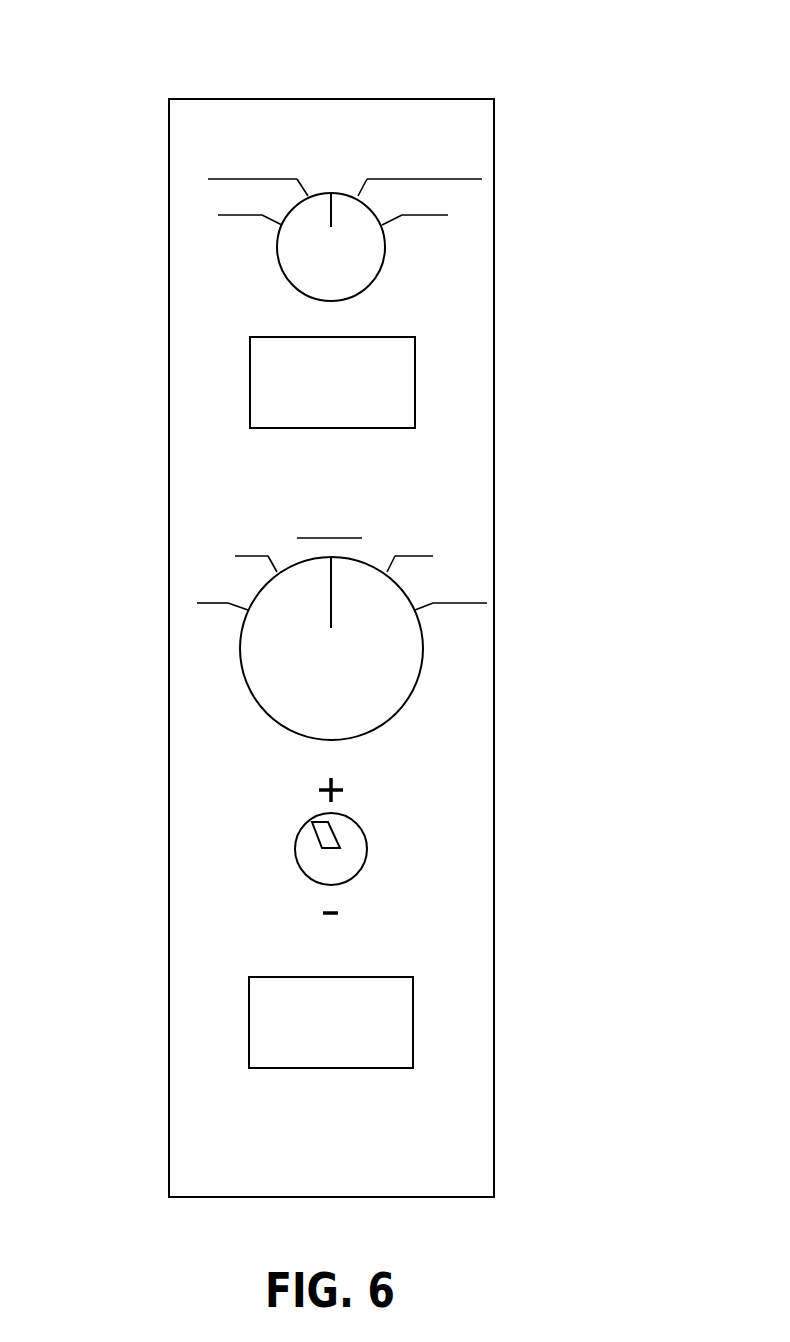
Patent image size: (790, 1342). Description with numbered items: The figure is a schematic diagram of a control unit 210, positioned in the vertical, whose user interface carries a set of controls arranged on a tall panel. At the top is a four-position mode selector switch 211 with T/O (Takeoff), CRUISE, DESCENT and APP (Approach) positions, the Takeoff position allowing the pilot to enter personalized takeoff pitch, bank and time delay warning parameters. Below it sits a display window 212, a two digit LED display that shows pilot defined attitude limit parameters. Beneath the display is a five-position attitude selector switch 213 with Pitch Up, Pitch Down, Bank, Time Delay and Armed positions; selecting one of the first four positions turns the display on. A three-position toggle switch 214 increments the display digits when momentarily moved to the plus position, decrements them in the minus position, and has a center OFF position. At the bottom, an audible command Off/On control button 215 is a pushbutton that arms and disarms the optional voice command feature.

The control unit 210 is at (602, 117).
The 4-position mode selector switch 211 is at (252, 253).
The display window 212 is at (230, 378).
The 5-position attitude selector switch 213 is at (218, 652).
The 3-position toggle switch 214 is at (270, 842).
The audible command Off/On control button 215 is at (235, 1017).